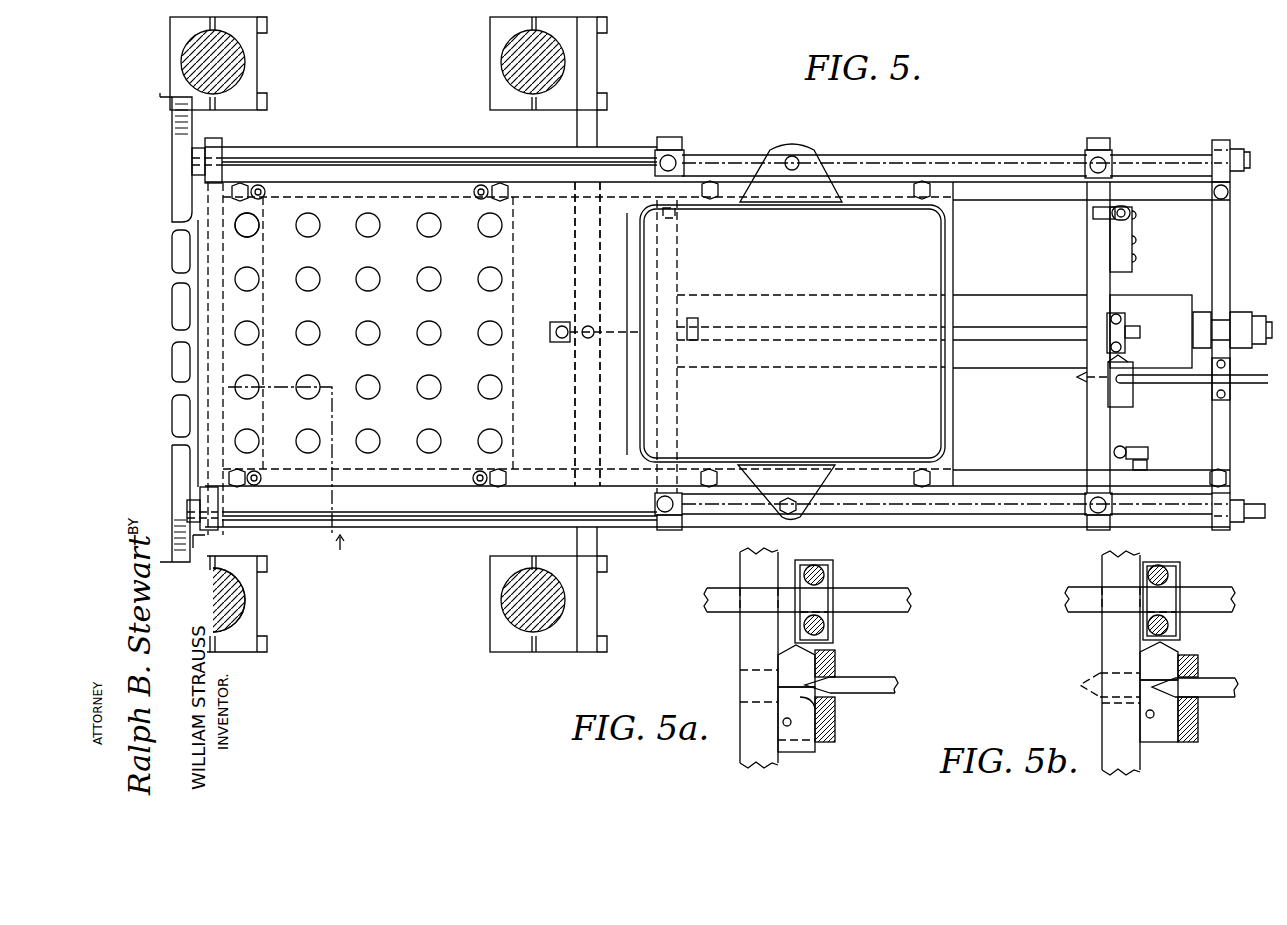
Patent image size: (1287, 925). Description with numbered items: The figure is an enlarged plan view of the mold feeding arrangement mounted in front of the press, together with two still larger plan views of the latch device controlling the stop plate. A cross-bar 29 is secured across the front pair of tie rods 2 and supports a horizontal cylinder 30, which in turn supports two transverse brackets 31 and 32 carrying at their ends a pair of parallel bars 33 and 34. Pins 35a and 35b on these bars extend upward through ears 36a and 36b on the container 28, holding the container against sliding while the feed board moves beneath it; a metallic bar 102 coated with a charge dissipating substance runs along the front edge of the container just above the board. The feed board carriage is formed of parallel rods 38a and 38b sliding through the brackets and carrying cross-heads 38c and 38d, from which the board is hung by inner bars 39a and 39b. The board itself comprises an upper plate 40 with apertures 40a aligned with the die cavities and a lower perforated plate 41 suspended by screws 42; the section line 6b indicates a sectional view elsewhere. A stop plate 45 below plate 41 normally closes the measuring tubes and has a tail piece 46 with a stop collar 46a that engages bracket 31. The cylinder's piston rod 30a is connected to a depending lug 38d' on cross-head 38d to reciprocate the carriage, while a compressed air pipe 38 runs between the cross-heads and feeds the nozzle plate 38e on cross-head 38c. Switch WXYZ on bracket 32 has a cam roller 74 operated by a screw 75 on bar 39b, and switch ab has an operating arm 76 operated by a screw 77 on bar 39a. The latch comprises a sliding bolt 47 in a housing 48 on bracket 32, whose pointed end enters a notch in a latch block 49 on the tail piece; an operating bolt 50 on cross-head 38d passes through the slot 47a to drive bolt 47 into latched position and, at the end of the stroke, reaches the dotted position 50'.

In FIG. 5, the tie rods 2 is at (560, 62).
In FIG. 5, the cross-bar 29 is at (598, 135).
In FIG. 5, the nozzle plate 38e is at (178, 213).
In FIG. 5, the cross-head 38c is at (222, 142).
In FIG. 5, the rod 38b is at (300, 153).
In FIG. 5, the bar 33 is at (893, 156).
In FIG. 5, the rod 38a is at (398, 522).
In FIG. 5, the bar 34 is at (983, 517).
In FIG. 5, the upper horizontal plate 40 is at (352, 185).
In FIG. 5, the apertures 40a is at (258, 232).
In FIG. 5, the lower perforated plate 41 is at (263, 310).
In FIG. 5, the depending lug 38d' is at (240, 359).
In FIG. 5, the screws 42 is at (258, 185).
In FIG. 5, the section line 6b is at (271, 476).
In FIG. 5, the bracket 31 is at (668, 137).
In FIG. 5, the ear 36b is at (792, 148).
In FIG. 5, the pin 35b is at (796, 153).
In FIG. 5, the ear 36a is at (770, 520).
In FIG. 5, the pin 35a is at (800, 522).
In FIG. 5, the container 28 is at (945, 243).
In FIG. 5, the metallic bar 102 is at (627, 268).
In FIG. 5, the screw 75 is at (675, 222).
In FIG. 5, the stop collar 46a is at (698, 325).
In FIG. 5, the stop plate 45 is at (600, 390).
In FIG. 5, the bar 39b is at (985, 195).
In FIG. 5, the bar 39a is at (1000, 472).
In FIG. 5, the bracket 32 is at (1098, 137).
In FIG. 5A, the bracket 32 is at (740, 566).
In FIG. 5B, the bracket 32 is at (1102, 572).
In FIG. 5, the cross-head 38d is at (1229, 301).
In FIG. 5, the compressed air pipe 38 is at (1243, 502).
In FIG. 5, the cam roller 74 is at (1093, 213).
In FIG. 5, the switch WXYZ is at (1128, 247).
In FIG. 5, the piston rod 30a is at (1196, 305).
In FIG. 5, the tail piece 46 is at (1020, 340).
In FIG. 5A, the tail piece 46 is at (880, 592).
In FIG. 5B, the tail piece 46 is at (1210, 592).
In FIG. 5, the horizontal cylinder 30 is at (1000, 366).
In FIG. 5, the latch block 49 is at (1120, 320).
In FIG. 5A, the latch block 49 is at (836, 628).
In FIG. 5B, the latch block 49 is at (1182, 627).
In FIG. 5, the housing 48 is at (1135, 365).
In FIG. 5A, the housing 48 is at (836, 660).
In FIG. 5B, the housing 48 is at (1200, 660).
In FIG. 5, the pointed latch bolt 50 is at (1192, 382).
In FIG. 5A, the pointed latch bolt 50 is at (866, 675).
In FIG. 5B, the pointed latch bolt 50 is at (1190, 710).
In FIG. 5, the switch ab is at (1120, 447).
In FIG. 5, the operating arm 76 is at (1140, 452).
In FIG. 5, the screw 77 is at (1150, 463).
In FIG. 5A, the slot 47a is at (818, 705).
In FIG. 5A, the sliding bolt 47 is at (802, 752).
In FIG. 5B, the operating bolt position 50' is at (1089, 680).